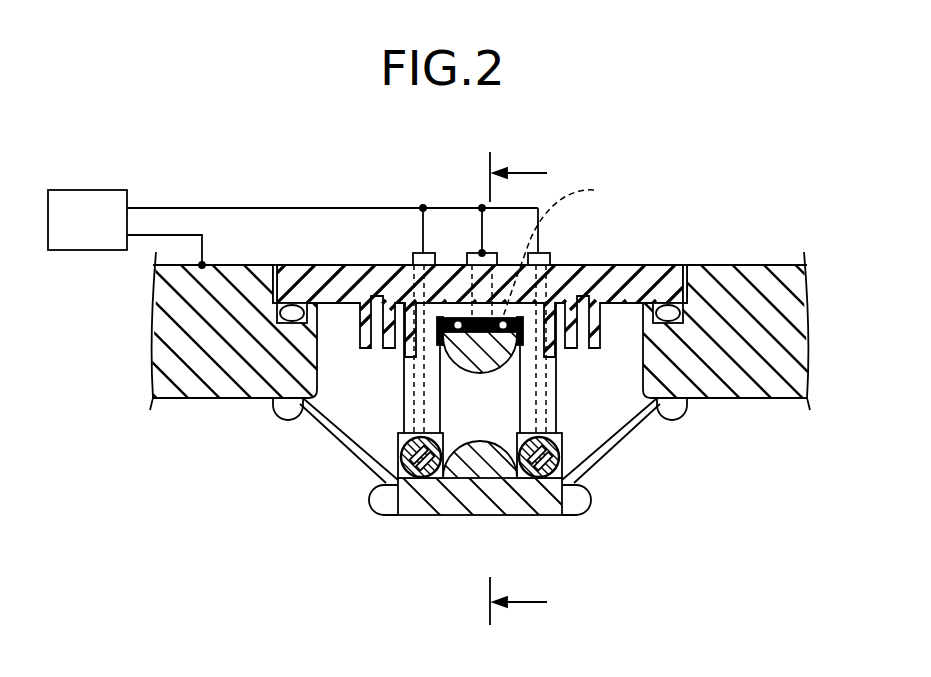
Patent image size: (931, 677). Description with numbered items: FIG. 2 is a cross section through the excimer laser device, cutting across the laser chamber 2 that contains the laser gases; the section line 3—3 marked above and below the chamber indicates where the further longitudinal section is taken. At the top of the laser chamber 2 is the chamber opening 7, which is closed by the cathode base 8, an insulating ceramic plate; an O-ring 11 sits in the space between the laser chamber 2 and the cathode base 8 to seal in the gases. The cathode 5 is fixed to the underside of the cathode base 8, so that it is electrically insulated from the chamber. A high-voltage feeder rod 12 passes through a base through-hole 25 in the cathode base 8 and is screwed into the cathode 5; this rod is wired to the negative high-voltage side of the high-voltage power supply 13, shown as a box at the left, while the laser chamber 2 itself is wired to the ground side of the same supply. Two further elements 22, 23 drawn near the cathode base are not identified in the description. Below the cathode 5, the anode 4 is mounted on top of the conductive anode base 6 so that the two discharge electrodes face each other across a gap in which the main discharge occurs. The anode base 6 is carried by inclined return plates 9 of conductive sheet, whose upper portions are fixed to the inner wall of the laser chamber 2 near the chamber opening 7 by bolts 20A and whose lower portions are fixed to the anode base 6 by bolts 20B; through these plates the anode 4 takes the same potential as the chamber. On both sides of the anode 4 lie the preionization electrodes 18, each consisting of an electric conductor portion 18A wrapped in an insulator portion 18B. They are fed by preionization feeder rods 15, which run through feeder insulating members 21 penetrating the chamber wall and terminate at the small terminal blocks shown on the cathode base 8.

The laser chamber 2 is at (172, 400).
The section line 3 is at (529, 388).
The anode 4 is at (470, 441).
The cathode 5 is at (475, 375).
The anode base 6 is at (513, 503).
The chamber opening 7 is at (683, 275).
The cathode base 8 is at (645, 277).
The return plates 9 is at (340, 440).
The O-ring 11 is at (280, 318).
The high-voltage feeder rod 12 is at (502, 242).
The high-voltage power supply 13 is at (79, 252).
The preionization feeder rods 15 is at (420, 252).
The preionization electrode 18 is at (554, 529).
The electric conductor portion 18A is at (553, 468).
The insulator portion 18B is at (548, 447).
The bolts 20A is at (279, 426).
The bolts 20B is at (378, 505).
The feeder insulating members 21 is at (401, 386).
The first electrode 22 is at (446, 300).
The second electrode 23 is at (450, 317).
The base through-holes 25 is at (564, 246).